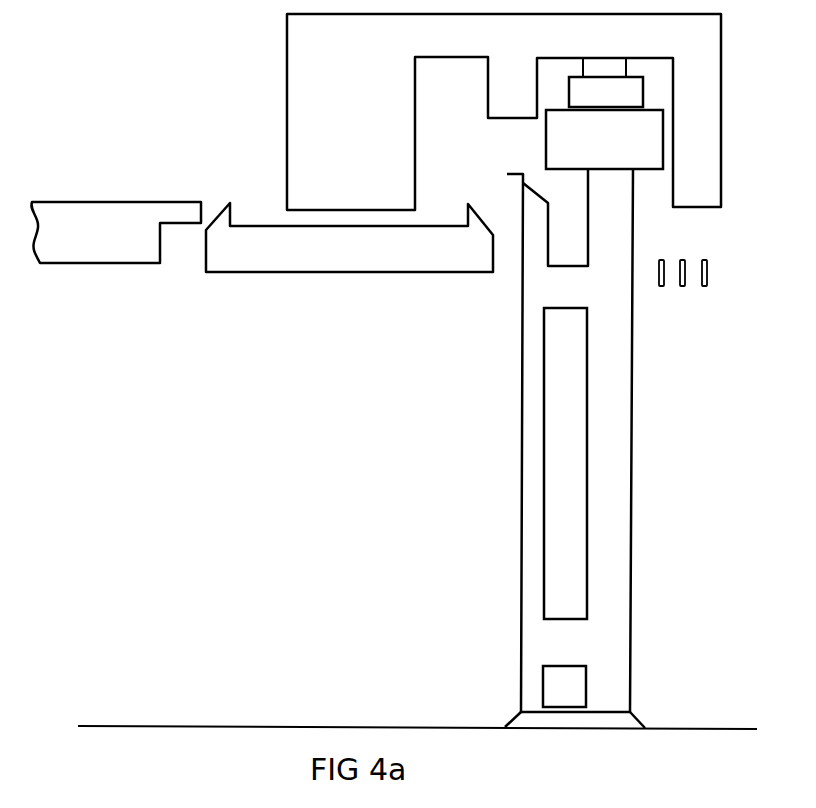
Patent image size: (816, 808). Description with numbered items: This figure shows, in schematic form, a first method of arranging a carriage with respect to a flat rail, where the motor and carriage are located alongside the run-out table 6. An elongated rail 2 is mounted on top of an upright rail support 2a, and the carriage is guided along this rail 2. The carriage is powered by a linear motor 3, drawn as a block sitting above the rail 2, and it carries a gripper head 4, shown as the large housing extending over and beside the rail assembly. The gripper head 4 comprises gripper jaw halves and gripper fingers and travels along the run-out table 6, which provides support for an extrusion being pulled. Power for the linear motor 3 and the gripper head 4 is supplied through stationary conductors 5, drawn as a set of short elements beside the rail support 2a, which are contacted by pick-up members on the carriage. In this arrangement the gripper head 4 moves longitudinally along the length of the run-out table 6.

The gripper head 4 is at (504, 112).
The linear motor 3 is at (606, 82).
The rail 2 is at (604, 139).
The rail support 2a is at (623, 529).
The run-out table 6 is at (349, 237).
The stationary conductors 5 is at (661, 286).